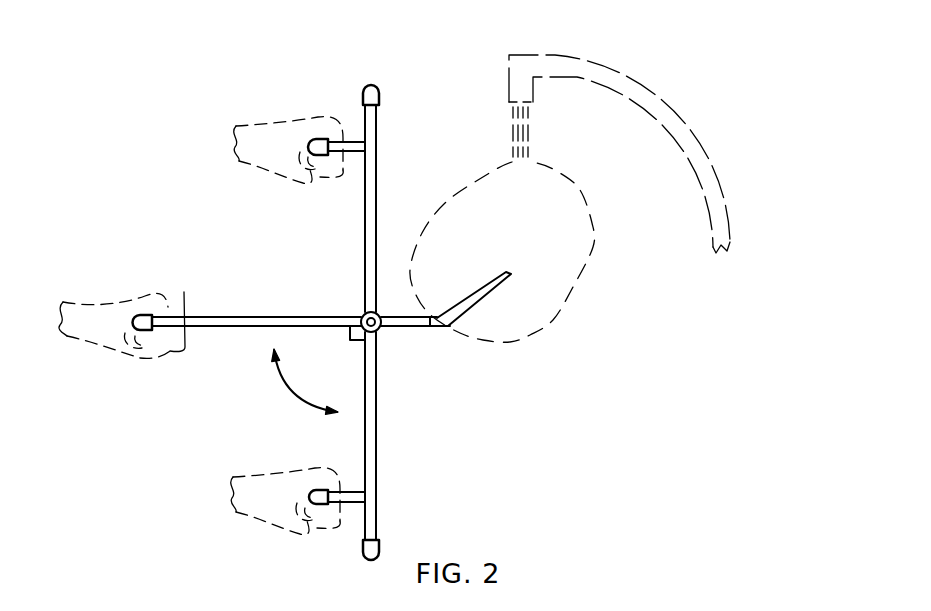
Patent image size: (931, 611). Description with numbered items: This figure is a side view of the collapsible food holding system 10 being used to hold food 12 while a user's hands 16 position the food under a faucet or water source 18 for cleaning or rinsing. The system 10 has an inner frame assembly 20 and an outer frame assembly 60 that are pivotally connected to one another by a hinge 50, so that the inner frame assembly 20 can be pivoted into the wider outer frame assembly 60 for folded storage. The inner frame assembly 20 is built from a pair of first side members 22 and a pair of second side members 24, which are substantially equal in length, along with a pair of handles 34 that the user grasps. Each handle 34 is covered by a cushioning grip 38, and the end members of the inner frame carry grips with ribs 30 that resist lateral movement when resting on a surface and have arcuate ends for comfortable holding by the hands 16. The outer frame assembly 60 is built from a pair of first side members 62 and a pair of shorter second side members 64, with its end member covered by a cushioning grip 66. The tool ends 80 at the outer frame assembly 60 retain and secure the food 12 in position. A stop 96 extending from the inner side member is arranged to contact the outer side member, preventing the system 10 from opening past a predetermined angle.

The collapsible food holding system 10 is at (230, 40).
The food 12 is at (570, 290).
The user's hands 16 is at (235, 128).
The faucet or water source 18 is at (673, 112).
The inner frame assembly 20 is at (380, 512).
The first side members 22 is at (377, 447).
The second side members 24 is at (378, 165).
The ribs 30 is at (373, 83).
The handles 34 is at (356, 158).
The grip 38 is at (312, 140).
The hinge 50 is at (358, 311).
The outer frame assembly 60 is at (230, 331).
The first side members 62 is at (184, 292).
The second side members 64 is at (410, 327).
The grip 66 is at (134, 316).
The tool ends 80 is at (475, 307).
The stop 96 is at (356, 341).